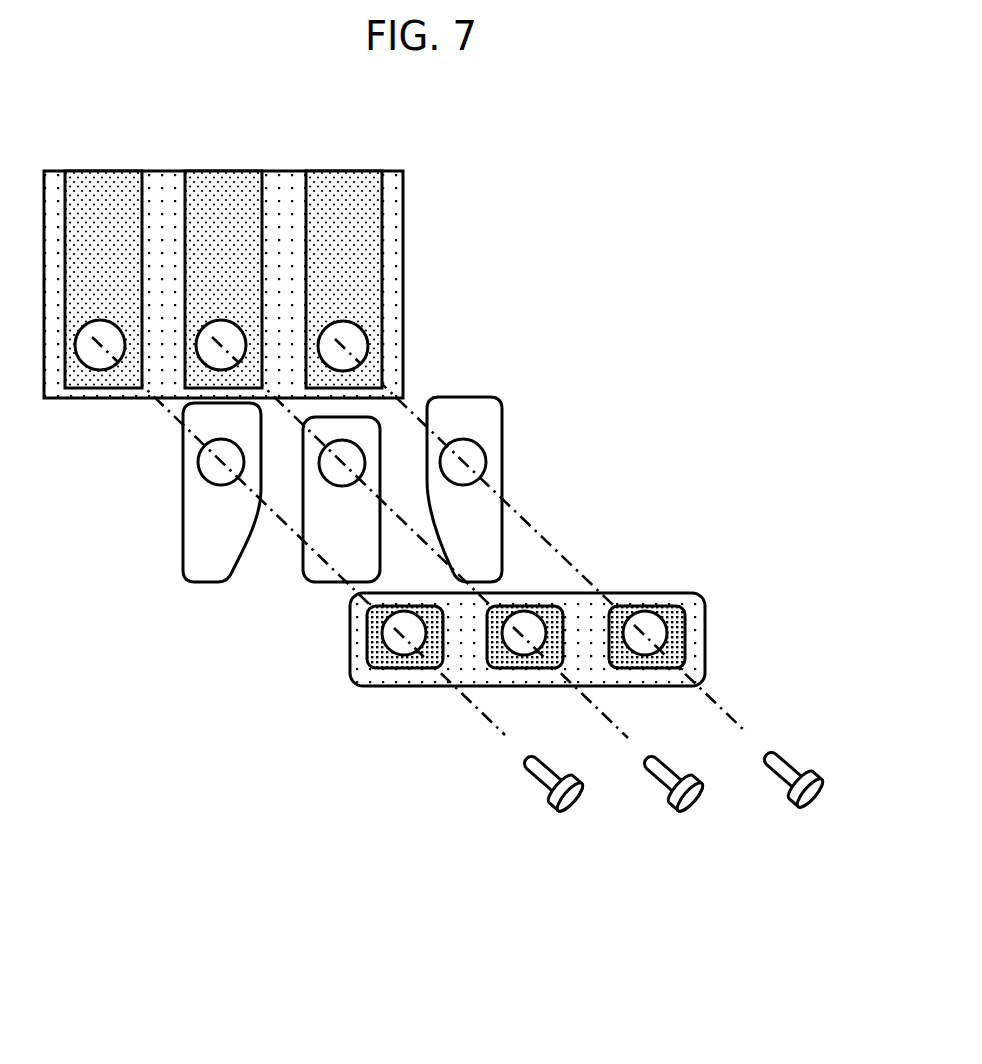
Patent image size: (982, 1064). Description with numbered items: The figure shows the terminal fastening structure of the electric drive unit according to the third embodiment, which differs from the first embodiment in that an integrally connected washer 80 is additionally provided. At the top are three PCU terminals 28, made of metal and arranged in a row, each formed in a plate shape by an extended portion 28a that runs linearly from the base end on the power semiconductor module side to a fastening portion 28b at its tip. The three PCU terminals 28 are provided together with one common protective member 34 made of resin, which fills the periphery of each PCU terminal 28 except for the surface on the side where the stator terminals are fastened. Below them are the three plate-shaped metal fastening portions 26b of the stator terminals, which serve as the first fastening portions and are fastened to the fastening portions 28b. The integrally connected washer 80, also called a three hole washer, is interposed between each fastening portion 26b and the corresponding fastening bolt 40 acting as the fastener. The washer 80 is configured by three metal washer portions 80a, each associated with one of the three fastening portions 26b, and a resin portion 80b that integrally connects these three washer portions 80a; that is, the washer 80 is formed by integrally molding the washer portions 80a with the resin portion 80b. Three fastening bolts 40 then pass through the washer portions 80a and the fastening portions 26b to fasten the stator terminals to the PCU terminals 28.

The PCU terminal 28 is at (286, 259).
The extended portion 28a is at (340, 248).
The fastening portion 28b is at (373, 328).
The protective member 34 is at (392, 285).
The fastening portion 26b is at (205, 564).
The integrally connected washer 80 is at (536, 644).
The washer portion 80a is at (528, 627).
The resin portion 80b is at (393, 677).
The fastening bolt 40 is at (582, 803).